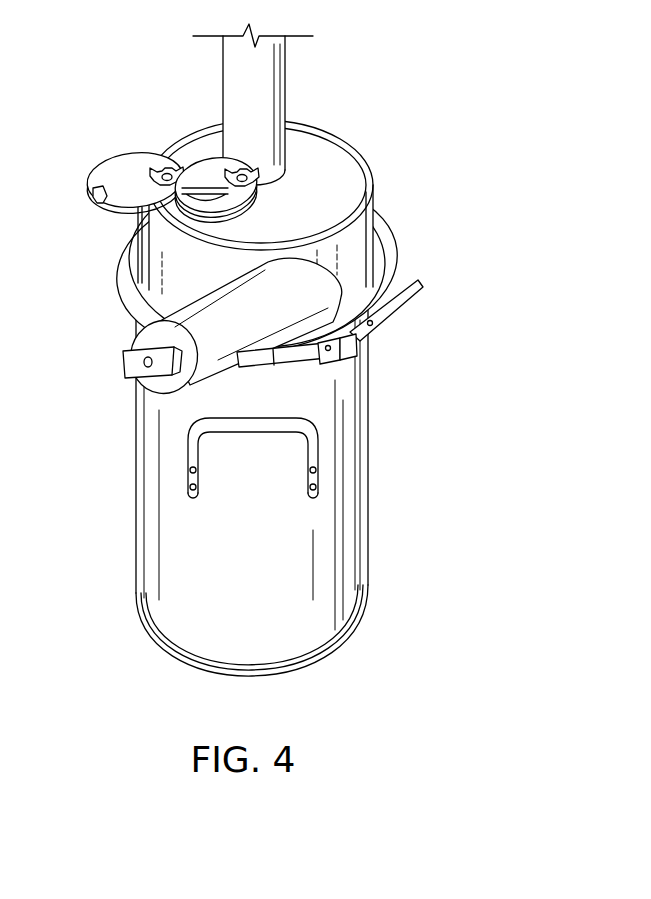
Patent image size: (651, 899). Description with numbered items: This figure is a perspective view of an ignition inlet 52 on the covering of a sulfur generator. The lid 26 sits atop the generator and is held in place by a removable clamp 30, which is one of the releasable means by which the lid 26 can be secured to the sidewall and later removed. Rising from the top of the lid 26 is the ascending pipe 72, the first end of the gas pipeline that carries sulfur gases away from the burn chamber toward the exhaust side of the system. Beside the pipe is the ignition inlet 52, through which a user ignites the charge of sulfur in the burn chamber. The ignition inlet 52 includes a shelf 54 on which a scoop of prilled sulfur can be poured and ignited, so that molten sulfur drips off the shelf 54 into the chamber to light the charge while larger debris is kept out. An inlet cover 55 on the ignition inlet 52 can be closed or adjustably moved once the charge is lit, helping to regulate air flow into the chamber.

The lid 26 is at (352, 237).
The clamp 30 is at (378, 333).
The ignition inlet 52 is at (198, 153).
The shelf 54 is at (195, 208).
The inlet cover 55 is at (120, 175).
The ascending pipe 72 is at (268, 88).